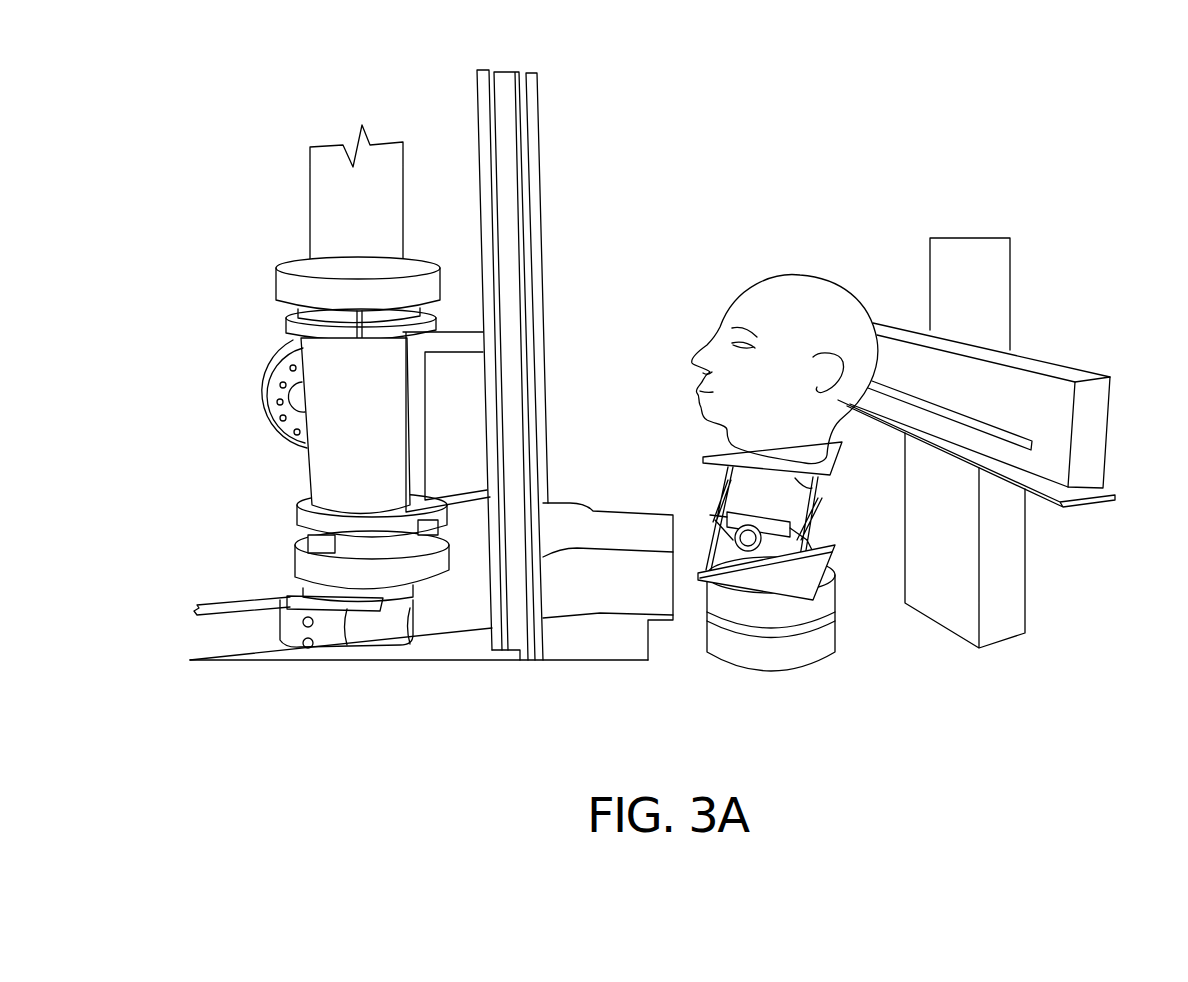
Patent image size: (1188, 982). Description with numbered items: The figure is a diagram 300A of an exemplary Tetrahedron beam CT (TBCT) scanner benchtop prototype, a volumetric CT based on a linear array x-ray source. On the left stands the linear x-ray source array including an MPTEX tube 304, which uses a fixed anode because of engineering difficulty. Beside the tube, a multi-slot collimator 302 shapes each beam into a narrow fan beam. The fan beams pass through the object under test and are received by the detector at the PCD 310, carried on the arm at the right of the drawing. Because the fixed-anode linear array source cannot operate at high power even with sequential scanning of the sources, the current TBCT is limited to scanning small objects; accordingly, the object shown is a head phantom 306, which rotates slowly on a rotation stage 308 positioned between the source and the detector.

The diagram of a Tetrahedron beam CT 300A is at (960, 108).
The multi-slot collimator 302 is at (467, 398).
The MPTEX tube 304 is at (312, 467).
The head phantom 306 is at (770, 280).
The rotation stage 308 is at (780, 673).
The PCD 310 is at (980, 420).